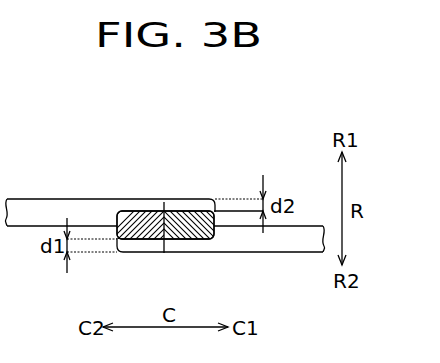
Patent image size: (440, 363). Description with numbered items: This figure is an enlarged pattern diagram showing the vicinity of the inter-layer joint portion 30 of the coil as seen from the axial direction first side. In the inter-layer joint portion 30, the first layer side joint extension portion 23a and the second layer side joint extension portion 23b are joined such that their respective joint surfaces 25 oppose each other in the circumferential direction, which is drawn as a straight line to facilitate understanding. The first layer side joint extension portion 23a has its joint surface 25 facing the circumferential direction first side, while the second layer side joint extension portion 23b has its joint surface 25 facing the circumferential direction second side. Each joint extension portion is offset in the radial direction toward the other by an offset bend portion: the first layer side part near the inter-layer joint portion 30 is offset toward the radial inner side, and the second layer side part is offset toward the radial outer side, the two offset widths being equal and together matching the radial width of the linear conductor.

The first layer side joint extension portion 23a is at (302, 250).
The second layer side joint extension portion 23b is at (52, 205).
The joint surface 25 is at (182, 217).
The inter-layer joint portion 30 is at (163, 256).